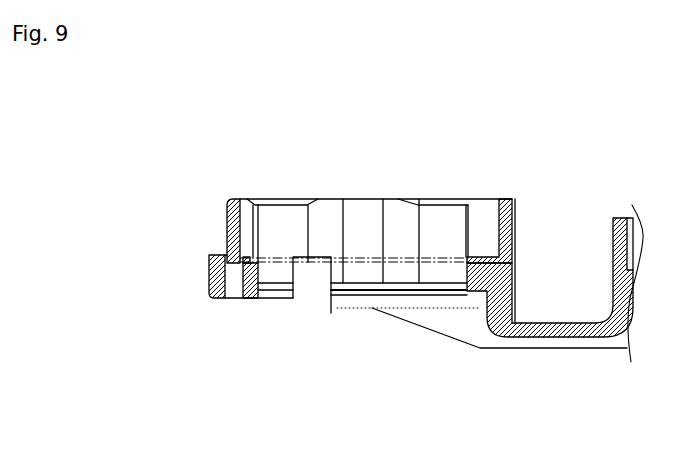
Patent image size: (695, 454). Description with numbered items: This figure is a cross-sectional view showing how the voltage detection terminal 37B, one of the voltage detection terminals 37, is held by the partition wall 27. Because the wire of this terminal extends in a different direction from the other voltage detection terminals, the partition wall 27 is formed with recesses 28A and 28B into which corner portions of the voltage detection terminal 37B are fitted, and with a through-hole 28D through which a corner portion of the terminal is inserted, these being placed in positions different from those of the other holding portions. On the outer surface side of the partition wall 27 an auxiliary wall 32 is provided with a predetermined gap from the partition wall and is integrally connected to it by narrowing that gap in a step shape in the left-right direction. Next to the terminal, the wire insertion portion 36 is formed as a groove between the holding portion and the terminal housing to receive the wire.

The partition wall 27 is at (227, 220).
The recess 28A is at (251, 262).
The recess 28B is at (486, 258).
The through-hole 28D is at (317, 259).
The auxiliary wall 32 is at (210, 268).
The wire insertion portion 36 is at (559, 322).
The voltage detection terminal 37B is at (368, 255).
The voltage detection terminal 37 is at (376, 217).